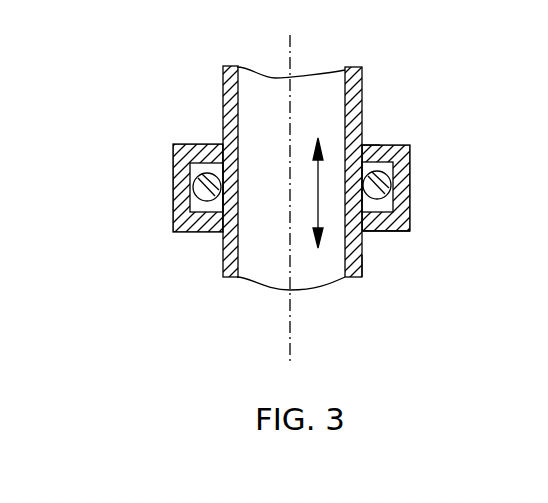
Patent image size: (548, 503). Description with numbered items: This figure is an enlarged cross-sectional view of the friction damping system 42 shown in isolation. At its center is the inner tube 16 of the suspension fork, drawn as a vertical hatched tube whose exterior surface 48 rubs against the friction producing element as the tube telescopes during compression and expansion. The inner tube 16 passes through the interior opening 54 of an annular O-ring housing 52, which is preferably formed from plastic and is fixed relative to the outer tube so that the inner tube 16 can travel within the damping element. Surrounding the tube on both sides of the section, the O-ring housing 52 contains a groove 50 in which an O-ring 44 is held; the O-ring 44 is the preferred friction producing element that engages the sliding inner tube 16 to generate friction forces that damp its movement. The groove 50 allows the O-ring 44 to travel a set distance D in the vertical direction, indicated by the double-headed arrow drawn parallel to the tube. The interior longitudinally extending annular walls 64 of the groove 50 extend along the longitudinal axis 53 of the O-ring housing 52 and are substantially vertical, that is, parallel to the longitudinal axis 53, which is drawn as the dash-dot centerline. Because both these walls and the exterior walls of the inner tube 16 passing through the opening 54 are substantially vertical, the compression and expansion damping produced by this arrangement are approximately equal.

The inner tube 16 is at (336, 107).
The friction damping system 42 is at (139, 184).
The O-ring 44 is at (197, 182).
The exterior surface 48 is at (363, 266).
The groove 50 is at (394, 168).
The O-ring housing 52 is at (397, 233).
The longitudinal axis 53 is at (290, 358).
The interior opening 54 is at (363, 142).
The interior longitudinally extending annular walls 64 is at (378, 210).
The set distance D is at (317, 171).